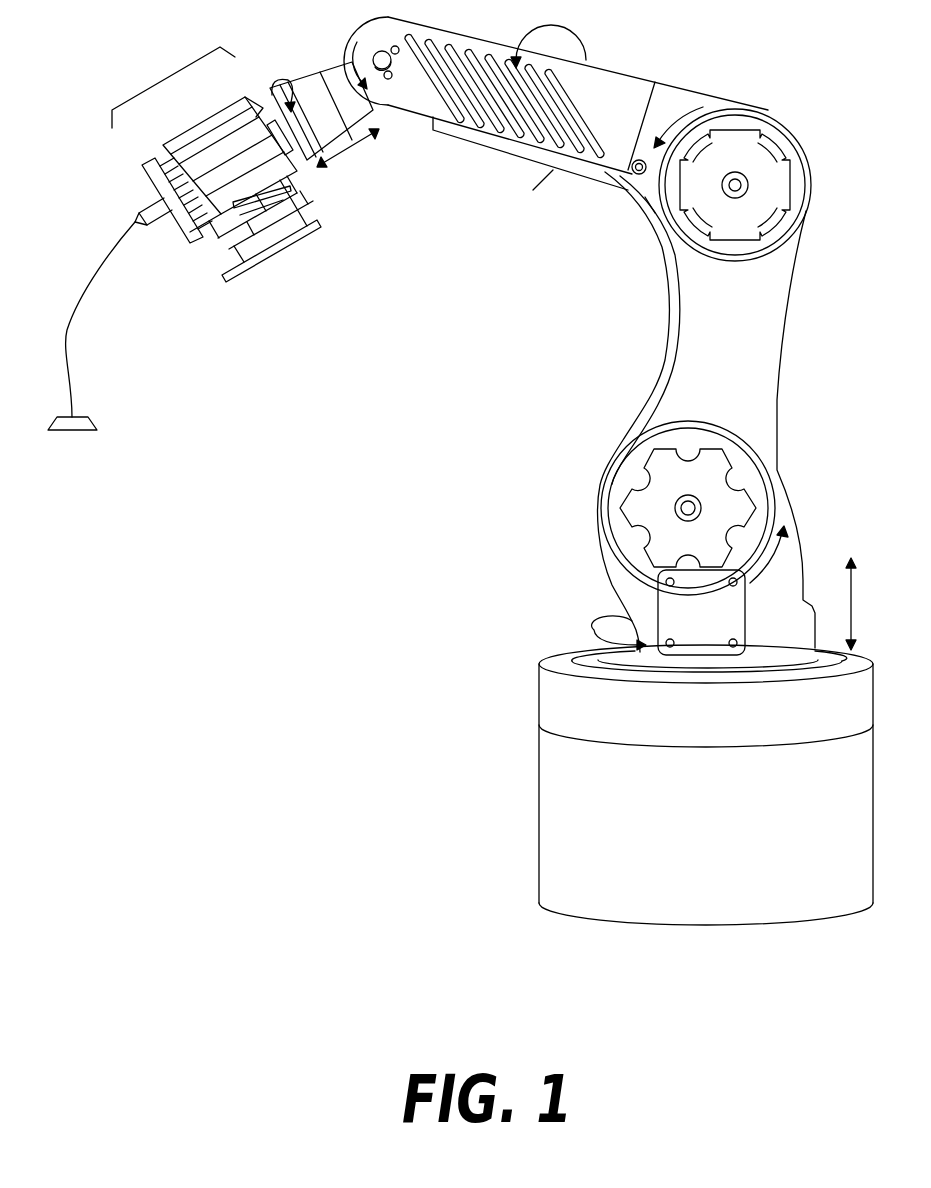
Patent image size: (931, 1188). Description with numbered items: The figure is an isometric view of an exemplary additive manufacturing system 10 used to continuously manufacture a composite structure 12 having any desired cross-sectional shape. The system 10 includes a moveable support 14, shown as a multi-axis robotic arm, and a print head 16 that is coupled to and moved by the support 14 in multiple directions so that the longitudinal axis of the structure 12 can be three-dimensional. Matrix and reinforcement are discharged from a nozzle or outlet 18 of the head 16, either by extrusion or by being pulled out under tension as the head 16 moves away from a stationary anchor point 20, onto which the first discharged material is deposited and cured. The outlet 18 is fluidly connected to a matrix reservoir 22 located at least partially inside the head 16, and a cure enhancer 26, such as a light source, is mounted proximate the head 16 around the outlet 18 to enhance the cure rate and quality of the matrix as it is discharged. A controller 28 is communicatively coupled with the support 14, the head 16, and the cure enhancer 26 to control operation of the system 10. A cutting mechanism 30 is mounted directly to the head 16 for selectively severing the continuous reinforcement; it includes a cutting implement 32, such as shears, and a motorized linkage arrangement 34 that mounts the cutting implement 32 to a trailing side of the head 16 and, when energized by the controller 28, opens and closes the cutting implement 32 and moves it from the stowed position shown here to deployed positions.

The system 10 is at (401, 655).
The composite structure 12 is at (77, 367).
The moveable support 14 is at (705, 386).
The print head 16 is at (167, 78).
The outlet 18 is at (145, 200).
The anchor point 20 is at (74, 428).
The matrix reservoir 22 is at (213, 133).
The cure enhancer 26 is at (177, 223).
The controller 28 is at (688, 624).
The cutting mechanism 30 is at (327, 210).
The cutting implement 32 is at (224, 282).
The motorized linkage arrangement 34 is at (313, 207).